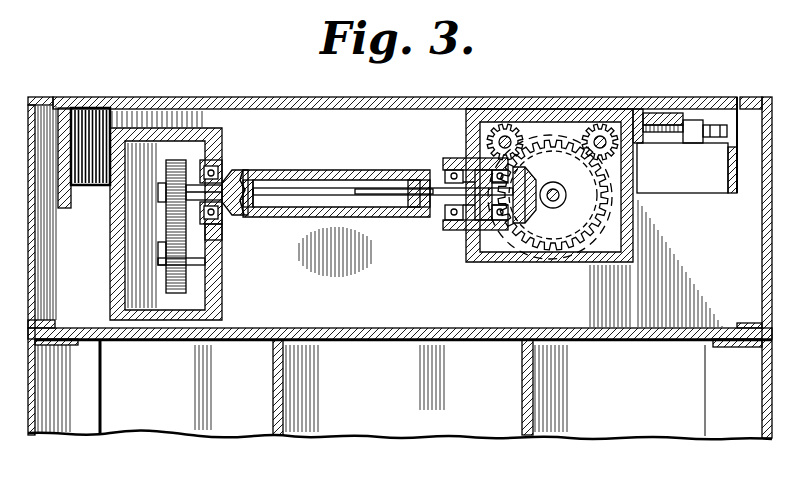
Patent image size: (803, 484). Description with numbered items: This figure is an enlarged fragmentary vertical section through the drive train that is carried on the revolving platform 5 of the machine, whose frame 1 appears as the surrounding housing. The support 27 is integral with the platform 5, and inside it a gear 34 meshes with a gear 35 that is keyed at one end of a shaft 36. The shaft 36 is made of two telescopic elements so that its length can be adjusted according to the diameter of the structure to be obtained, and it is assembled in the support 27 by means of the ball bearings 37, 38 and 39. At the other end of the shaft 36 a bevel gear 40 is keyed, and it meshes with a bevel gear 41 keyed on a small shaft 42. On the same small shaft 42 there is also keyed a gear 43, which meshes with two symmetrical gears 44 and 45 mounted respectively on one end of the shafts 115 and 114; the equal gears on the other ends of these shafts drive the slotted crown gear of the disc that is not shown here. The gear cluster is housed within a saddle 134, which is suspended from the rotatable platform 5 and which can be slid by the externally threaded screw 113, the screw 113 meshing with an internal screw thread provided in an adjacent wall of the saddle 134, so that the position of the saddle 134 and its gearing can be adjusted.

The frame 1 is at (43, 97).
The revolving platform 5 is at (368, 97).
The support 27 is at (110, 264).
The gear 34 is at (166, 278).
The gear 35 is at (166, 200).
The shaft 36 is at (346, 170).
The ball bearing 37 is at (222, 226).
The ball bearing 38 is at (443, 216).
The ball bearing 39 is at (470, 236).
The bevel gear 40 is at (528, 226).
The bevel gear 41 is at (564, 250).
The small shaft 42 is at (565, 202).
The gear 43 is at (561, 138).
The gear 44 is at (510, 126).
The gear 45 is at (606, 126).
The externally threaded screw 113 is at (672, 124).
The shaft 114 is at (628, 150).
The shaft 115 is at (502, 136).
The saddle 134 is at (636, 242).